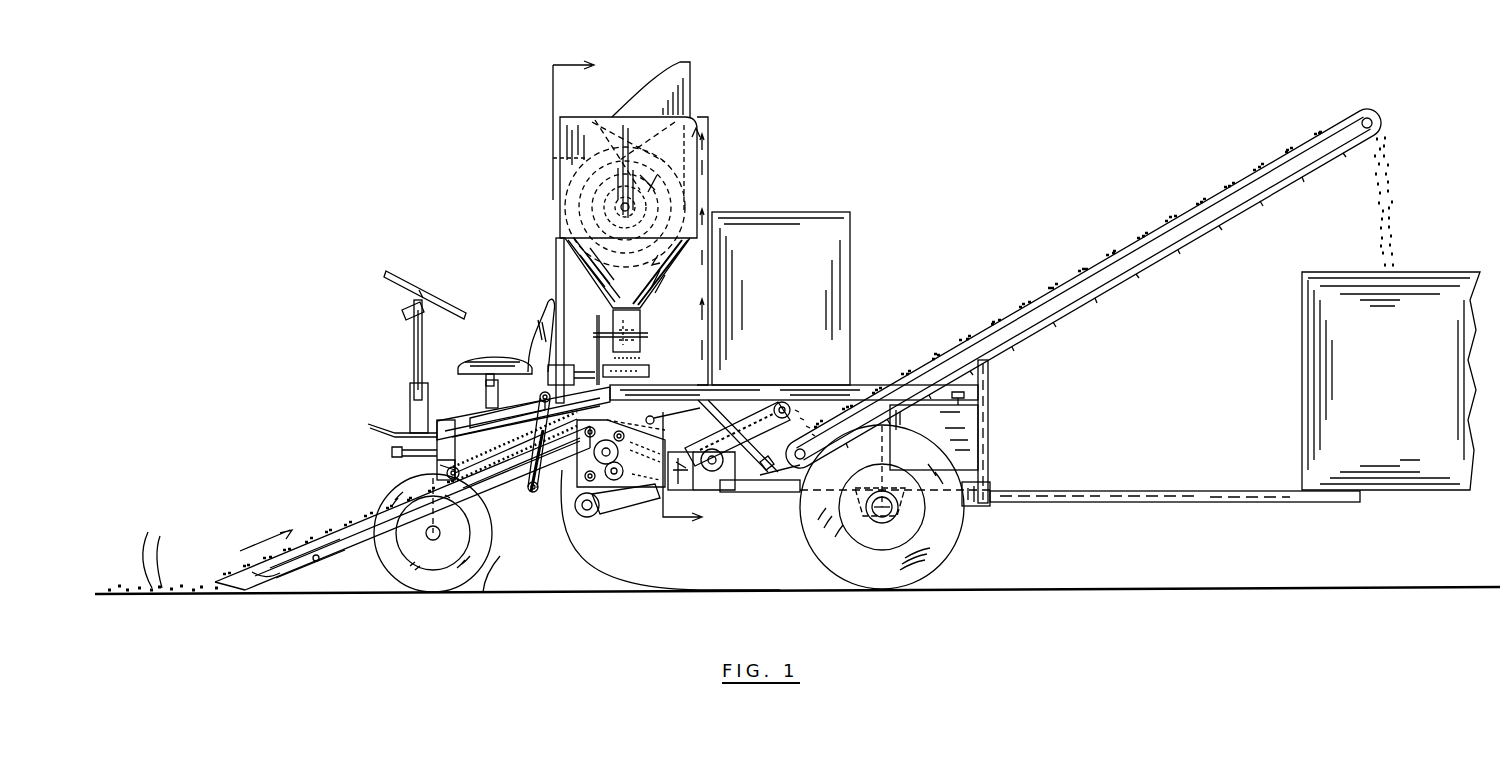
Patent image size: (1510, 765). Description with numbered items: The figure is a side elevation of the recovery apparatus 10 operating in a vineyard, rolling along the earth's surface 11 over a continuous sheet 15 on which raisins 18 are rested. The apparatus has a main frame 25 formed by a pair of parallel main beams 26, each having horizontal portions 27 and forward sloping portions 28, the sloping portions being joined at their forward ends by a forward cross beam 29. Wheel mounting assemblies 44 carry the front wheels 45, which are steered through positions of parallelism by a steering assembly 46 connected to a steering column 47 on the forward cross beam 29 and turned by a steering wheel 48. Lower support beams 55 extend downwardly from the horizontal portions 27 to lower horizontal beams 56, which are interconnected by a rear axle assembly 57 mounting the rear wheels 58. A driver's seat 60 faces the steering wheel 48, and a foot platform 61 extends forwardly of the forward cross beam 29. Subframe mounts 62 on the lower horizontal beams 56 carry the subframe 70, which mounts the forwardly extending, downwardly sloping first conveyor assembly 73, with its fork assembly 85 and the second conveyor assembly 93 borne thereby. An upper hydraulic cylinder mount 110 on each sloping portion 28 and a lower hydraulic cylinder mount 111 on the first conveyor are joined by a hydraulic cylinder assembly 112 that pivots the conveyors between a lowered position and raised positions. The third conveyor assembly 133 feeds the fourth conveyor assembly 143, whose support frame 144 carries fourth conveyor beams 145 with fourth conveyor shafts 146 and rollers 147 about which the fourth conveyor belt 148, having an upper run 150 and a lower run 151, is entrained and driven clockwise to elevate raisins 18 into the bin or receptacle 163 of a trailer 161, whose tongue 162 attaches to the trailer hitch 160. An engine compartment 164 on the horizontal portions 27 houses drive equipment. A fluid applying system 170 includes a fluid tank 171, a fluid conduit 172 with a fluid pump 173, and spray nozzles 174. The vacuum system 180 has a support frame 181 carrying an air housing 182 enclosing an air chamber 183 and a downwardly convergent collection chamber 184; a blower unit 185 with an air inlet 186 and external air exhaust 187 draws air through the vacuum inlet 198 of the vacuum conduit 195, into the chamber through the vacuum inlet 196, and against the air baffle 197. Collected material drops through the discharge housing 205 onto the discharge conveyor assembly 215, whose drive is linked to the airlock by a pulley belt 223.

The recovery apparatus 10 is at (792, 104).
The earth's surface 11 is at (500, 573).
The ground surface 15 is at (1285, 586).
The raisins 18 is at (1418, 190).
The main frame 25 is at (445, 375).
The main beams 26 is at (742, 386).
The horizontal portions 27 is at (793, 386).
The sloping portions 28 is at (505, 412).
The forward cross beam 29 is at (440, 428).
The wheel mounting assemblies 44 is at (425, 464).
The front wheel 45 is at (380, 572).
The steering assembly 46 is at (392, 452).
The steering column 47 is at (414, 357).
The steering wheel 48 is at (413, 290).
The lower support beams 55 is at (708, 397).
The lower horizontal beams 56 is at (978, 468).
The rear axle assembly 57 is at (871, 521).
The rear wheels 58 is at (950, 531).
The driver's seat 60 is at (542, 318).
The foot platform 61 is at (370, 430).
The subframe mounts 62 is at (708, 488).
The subframe 70 is at (540, 500).
The first conveyor assembly 73 is at (350, 563).
The fork assembly 85 is at (278, 570).
The second conveyor assembly 93 is at (477, 429).
The upper hydraulic cylinder mount 110 is at (540, 395).
The lower hydraulic cylinder mount 111 is at (531, 495).
The hydraulic cylinder assembly 112 is at (516, 450).
The third conveyor assembly 133 is at (613, 507).
The fourth conveyor assembly 143 is at (1050, 244).
The support frame 144 is at (990, 392).
The fourth conveyor beams 145 is at (1210, 224).
The fourth conveyor shafts 146 is at (1372, 118).
The rollers 147 is at (1360, 106).
The fourth conveyor belt 148 is at (1048, 290).
The upper run 150 is at (1028, 330).
The lower run 151 is at (1162, 252).
The trailer hitch 160 is at (1000, 488).
The trailer 161 is at (1276, 400).
The tongue 162 is at (1125, 490).
The bin or receptacle 163 is at (1396, 362).
The engine compartment 164 is at (800, 246).
The fluid applying system 170 is at (761, 496).
The fluid tank 171 is at (965, 432).
The fluid conduit 172 is at (790, 503).
The fluid pump 173 is at (758, 478).
The spray nozzles 174 is at (652, 414).
The vacuum system 180 is at (654, 68).
The support frame 181 is at (556, 248).
The air housing 182 is at (575, 138).
The air chamber 183 is at (552, 156).
The collection chamber 184 is at (582, 280).
The blower unit 185 is at (592, 110).
The air inlet 186 is at (616, 205).
The air exhaust 187 is at (690, 86).
The vacuum conduit 195 is at (710, 182).
The vacuum inlet 196 is at (710, 128).
The air baffle 197 is at (632, 171).
The vacuum inlet 198 is at (750, 434).
The discharge housing 205 is at (640, 312).
The discharge conveyor assembly 215 is at (645, 364).
The pulley belt 223 is at (599, 324).